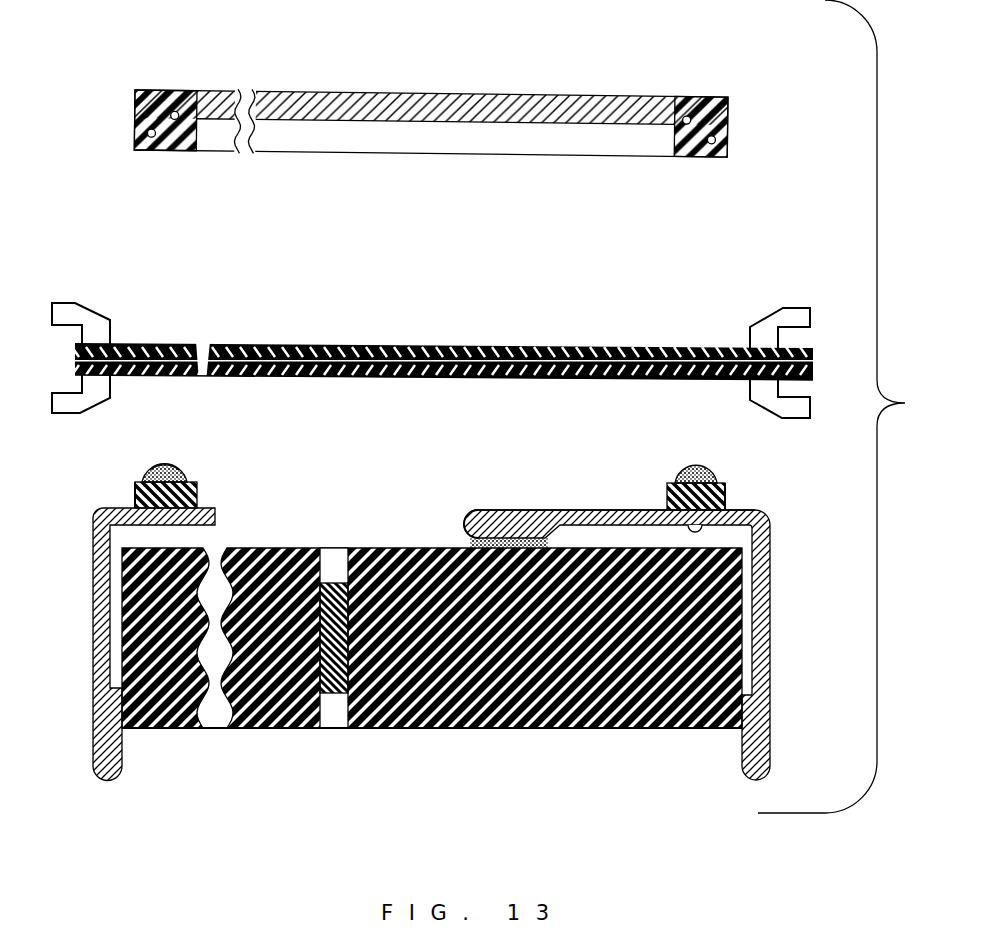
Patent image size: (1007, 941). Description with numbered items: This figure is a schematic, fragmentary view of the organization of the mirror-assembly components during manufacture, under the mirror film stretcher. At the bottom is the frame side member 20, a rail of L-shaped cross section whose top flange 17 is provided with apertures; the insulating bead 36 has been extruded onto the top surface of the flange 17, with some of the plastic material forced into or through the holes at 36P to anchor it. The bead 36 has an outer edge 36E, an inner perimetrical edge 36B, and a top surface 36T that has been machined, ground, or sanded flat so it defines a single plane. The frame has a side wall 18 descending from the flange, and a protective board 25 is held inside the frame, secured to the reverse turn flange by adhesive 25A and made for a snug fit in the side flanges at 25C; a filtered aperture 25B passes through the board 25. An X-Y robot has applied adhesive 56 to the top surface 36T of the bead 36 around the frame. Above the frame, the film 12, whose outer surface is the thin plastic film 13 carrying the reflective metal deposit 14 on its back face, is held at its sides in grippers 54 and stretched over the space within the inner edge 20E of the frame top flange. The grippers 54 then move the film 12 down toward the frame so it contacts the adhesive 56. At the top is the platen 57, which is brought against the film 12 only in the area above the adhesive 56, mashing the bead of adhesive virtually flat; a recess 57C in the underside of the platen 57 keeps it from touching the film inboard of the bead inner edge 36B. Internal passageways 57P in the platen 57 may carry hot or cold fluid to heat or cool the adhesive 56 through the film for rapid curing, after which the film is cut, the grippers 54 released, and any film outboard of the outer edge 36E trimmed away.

The platen 57 is at (440, 104).
The internal passageways 57P is at (176, 114).
The recess 57C is at (442, 148).
The film 12 is at (556, 292).
The grippers 54 is at (78, 302).
The thin plastic film 13 is at (444, 346).
The reflective metal deposit 14 is at (402, 378).
The adhesive 56 is at (459, 438).
The insulating bead 36 is at (431, 457).
The outer edge of insulating bead 36E is at (138, 497).
The bead inner perimetrical edge 36B is at (198, 492).
The top surface of bead 36T is at (668, 483).
The extruded plastic material in flange holes 36P is at (703, 537).
The top flange 17 is at (600, 512).
The frame side member 20 is at (482, 601).
The inner edge of frame top flange 20E is at (465, 518).
The frame side wall 18 is at (766, 670).
The protective board 25 is at (432, 656).
The adhesive 25A is at (574, 512).
The filtered aperture 25B is at (333, 562).
The snug fit 25C is at (742, 730).